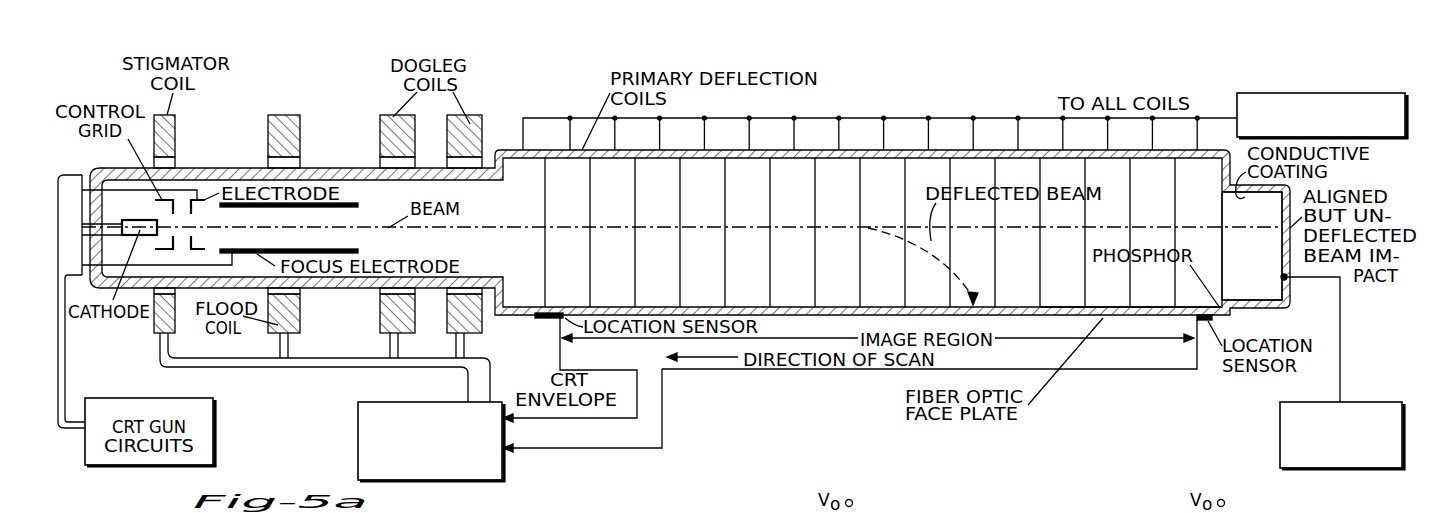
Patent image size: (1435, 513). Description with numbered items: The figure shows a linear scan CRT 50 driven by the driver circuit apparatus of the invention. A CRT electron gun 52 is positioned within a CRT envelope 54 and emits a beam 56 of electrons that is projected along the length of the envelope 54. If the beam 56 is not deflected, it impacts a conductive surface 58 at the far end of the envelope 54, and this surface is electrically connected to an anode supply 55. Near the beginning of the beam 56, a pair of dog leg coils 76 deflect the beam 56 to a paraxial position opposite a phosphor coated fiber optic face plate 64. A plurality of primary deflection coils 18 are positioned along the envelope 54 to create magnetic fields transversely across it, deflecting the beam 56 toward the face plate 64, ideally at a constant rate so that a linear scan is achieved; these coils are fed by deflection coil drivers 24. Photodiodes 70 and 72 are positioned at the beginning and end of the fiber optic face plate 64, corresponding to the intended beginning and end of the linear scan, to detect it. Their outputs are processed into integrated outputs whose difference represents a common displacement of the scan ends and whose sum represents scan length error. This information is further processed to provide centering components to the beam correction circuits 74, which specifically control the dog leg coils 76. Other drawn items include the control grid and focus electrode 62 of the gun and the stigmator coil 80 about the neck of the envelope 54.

The primary deflection coils 18 is at (545, 150).
The deflection coil drivers 24 is at (1369, 78).
The linear scan CRT 50 is at (836, 104).
The CRT electron gun 52 is at (220, 189).
The CRT envelope 54 is at (505, 332).
The anode supply 55 is at (1383, 402).
The beam 56 is at (462, 229).
The conductive surface 58 is at (1282, 238).
The focus electrode 62 is at (220, 247).
The phosphor coated fiber optic face plate 64 is at (1103, 317).
The photodiode 70 is at (1204, 315).
The photodiode 72 is at (561, 319).
The beam correction circuits 74 is at (397, 402).
The dog leg coils 76 is at (444, 141).
The stigmator coil 80 is at (155, 328).